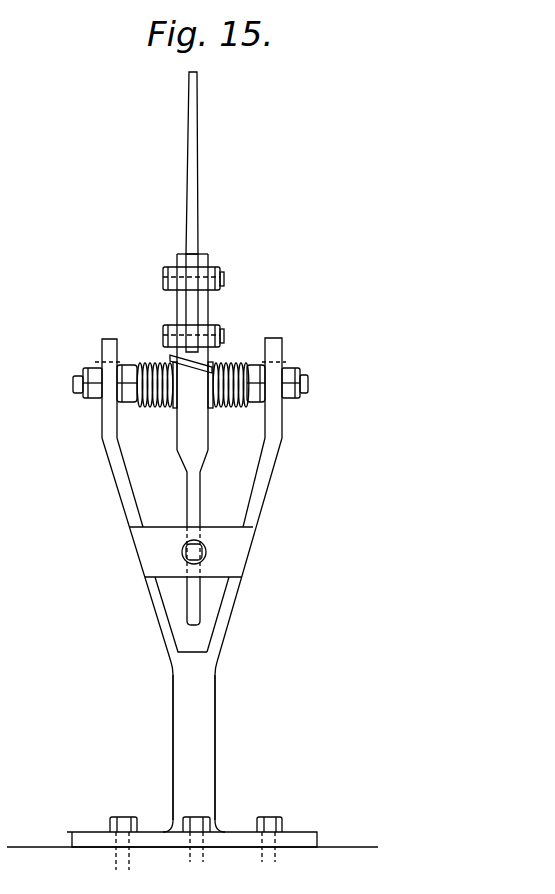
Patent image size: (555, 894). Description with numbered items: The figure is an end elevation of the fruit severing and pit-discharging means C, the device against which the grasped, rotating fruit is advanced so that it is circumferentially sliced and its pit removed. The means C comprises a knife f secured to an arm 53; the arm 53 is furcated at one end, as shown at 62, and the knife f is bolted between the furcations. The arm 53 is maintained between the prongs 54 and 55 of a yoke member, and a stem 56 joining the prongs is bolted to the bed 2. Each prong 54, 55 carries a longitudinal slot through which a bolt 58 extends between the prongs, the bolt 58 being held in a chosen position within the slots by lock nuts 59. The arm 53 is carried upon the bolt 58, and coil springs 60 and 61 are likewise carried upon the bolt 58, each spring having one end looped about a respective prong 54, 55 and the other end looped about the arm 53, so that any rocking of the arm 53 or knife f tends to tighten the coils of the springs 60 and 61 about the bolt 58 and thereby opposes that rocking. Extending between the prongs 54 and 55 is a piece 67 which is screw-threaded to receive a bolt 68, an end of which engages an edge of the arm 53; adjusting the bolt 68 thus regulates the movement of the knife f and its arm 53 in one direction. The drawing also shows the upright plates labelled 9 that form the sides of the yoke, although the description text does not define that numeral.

The bed 2 is at (288, 847).
The upright frame plates 9 is at (263, 482).
The arm 53 is at (198, 455).
The prong 54 is at (255, 510).
The prong 55 is at (133, 509).
The stem 56 is at (200, 731).
The bolt 58 is at (306, 384).
The lock nuts 59 is at (95, 398).
The coil spring 60 is at (224, 366).
The coil spring 61 is at (152, 364).
The furcations 62 is at (200, 307).
The piece 67 is at (230, 553).
The bolt 68 is at (184, 557).
The fruit severing and pit-discharging means C is at (163, 110).
The knife f is at (193, 177).